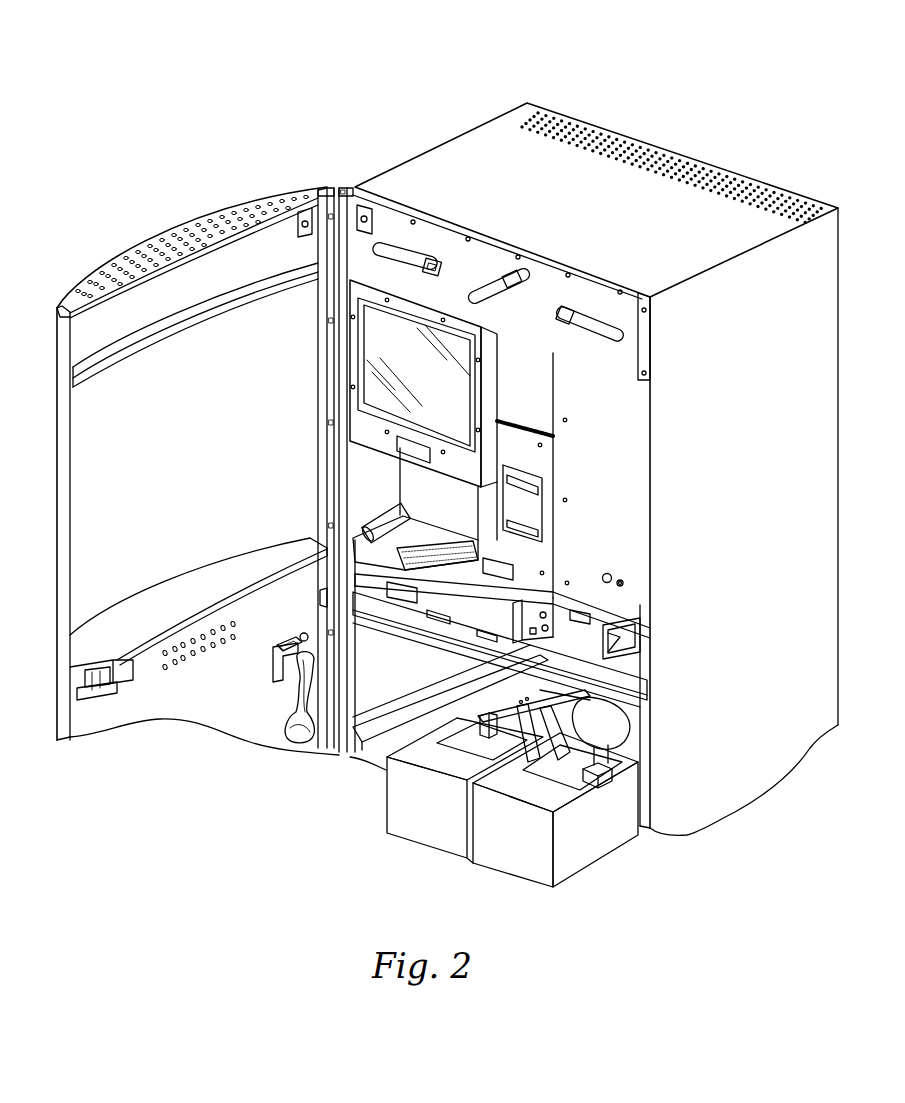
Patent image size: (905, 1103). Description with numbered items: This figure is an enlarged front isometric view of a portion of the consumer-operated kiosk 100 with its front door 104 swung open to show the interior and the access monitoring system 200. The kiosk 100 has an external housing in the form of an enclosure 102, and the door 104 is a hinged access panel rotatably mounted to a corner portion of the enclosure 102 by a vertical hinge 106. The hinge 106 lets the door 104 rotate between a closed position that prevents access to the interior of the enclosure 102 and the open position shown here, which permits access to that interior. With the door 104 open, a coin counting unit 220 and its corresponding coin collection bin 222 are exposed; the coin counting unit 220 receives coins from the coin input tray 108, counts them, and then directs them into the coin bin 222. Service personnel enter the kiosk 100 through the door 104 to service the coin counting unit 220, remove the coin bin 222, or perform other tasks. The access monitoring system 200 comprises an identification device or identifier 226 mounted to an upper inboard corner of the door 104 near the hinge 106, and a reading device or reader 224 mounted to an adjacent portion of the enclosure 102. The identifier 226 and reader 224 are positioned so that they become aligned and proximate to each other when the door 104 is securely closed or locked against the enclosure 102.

The consumer-operated kiosk 100 is at (706, 55).
The enclosure 102 is at (811, 258).
The front door 104 is at (148, 676).
The vertical hinge 106 is at (341, 755).
The coin input tray 108 is at (389, 522).
The access monitoring system 200 is at (327, 155).
The coin counting unit 220 is at (533, 700).
The coin collection bin 222 is at (419, 826).
The reader 224 is at (353, 189).
The identifier 226 is at (302, 214).